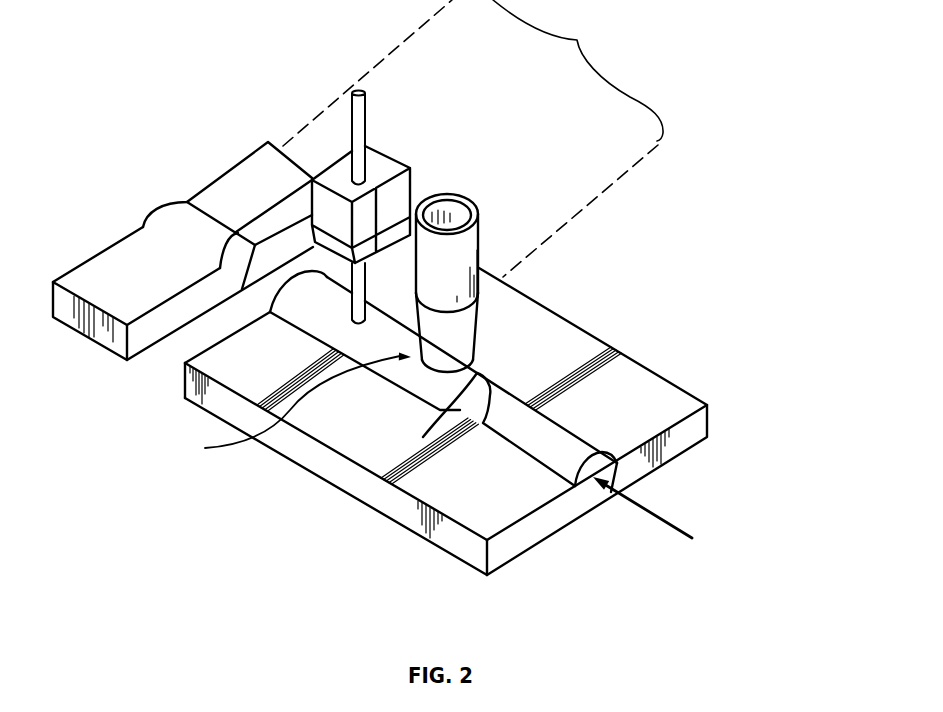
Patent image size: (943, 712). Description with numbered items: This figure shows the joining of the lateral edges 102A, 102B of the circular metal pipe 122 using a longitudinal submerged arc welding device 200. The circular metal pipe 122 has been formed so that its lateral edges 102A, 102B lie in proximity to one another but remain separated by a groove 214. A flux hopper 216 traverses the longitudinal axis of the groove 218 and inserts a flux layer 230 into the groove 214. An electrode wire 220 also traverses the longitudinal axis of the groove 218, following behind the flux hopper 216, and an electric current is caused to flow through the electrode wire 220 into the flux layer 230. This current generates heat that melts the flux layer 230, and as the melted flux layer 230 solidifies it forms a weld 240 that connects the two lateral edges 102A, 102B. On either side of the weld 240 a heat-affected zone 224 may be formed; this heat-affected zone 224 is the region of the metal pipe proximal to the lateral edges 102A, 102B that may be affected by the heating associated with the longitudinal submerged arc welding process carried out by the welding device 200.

The longitudinal submerged arc welding device 200 is at (473, 138).
The electrode wire 220 is at (360, 90).
The weld 240 is at (180, 223).
The flux hopper 216 is at (467, 199).
The heat-affected zone 224 is at (527, 380).
The groove 214 is at (565, 453).
The lateral edge 102A is at (624, 434).
The lateral edge 102B is at (520, 483).
The circular metal pipe 122 is at (300, 450).
The longitudinal axis of the groove 218 is at (673, 520).
The flux layer 230 is at (284, 409).